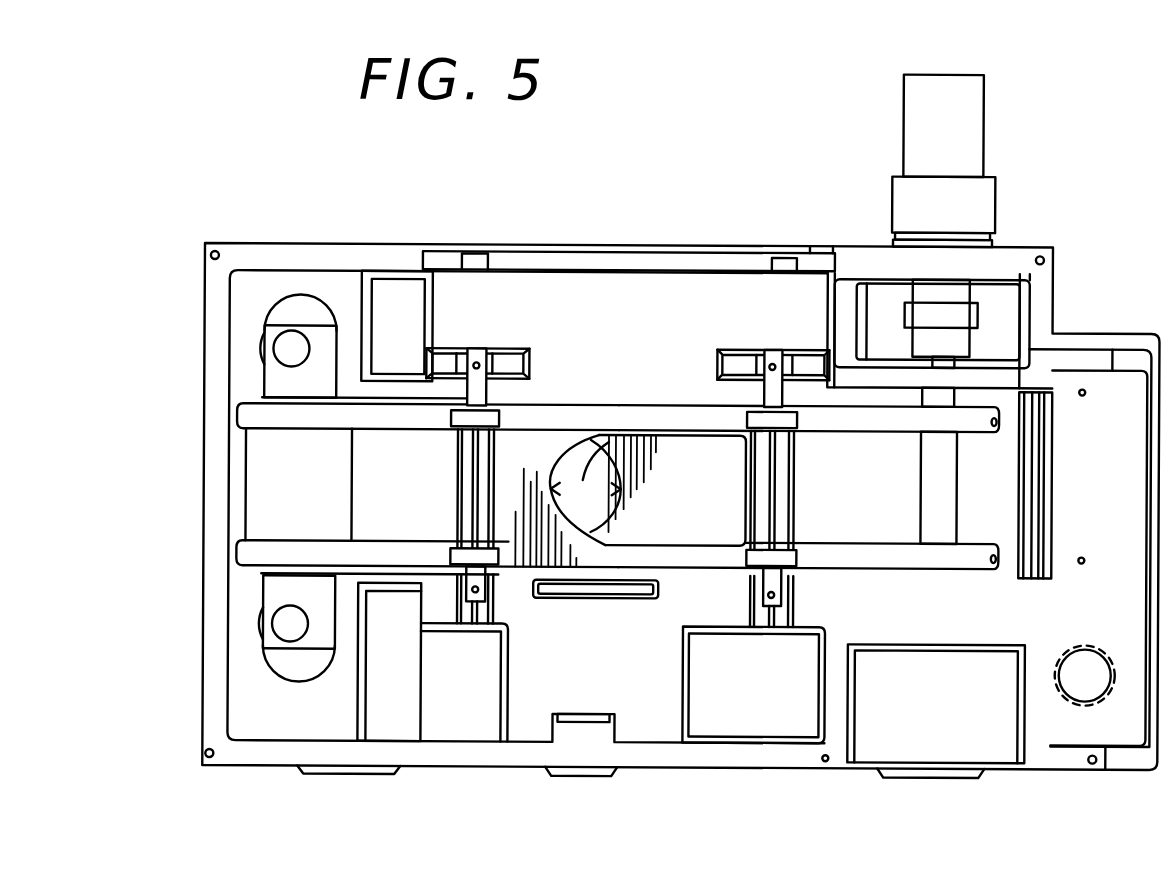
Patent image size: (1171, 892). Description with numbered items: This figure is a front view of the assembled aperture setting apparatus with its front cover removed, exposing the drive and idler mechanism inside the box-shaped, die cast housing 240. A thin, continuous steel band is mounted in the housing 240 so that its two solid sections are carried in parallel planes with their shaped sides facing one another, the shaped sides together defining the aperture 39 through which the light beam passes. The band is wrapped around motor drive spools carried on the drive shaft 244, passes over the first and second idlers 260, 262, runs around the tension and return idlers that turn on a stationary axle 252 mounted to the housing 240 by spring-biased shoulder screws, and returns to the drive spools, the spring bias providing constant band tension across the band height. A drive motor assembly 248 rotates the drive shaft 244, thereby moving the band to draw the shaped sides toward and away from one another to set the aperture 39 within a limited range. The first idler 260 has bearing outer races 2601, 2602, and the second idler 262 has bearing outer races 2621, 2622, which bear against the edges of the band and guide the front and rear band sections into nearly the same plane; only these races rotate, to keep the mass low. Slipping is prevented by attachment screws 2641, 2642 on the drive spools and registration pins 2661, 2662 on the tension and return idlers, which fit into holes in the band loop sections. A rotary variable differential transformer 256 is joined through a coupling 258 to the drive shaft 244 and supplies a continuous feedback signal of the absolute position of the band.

The aperture 39 is at (583, 480).
The housing 240 is at (253, 752).
The drive shaft 244 is at (948, 487).
The drive motor assembly 248 is at (1005, 740).
The stationary axle 252 is at (255, 500).
The rotary variable differential transformer 256 is at (987, 200).
The coupling 258 is at (976, 309).
The first idler 260 is at (477, 495).
The bearing outer race of first idler 2601 is at (507, 410).
The bearing outer race of first idler 2602 is at (500, 561).
The second idler 262 is at (769, 480).
The bearing outer race of second idler 2621 is at (745, 410).
The bearing outer race of second idler 2622 is at (700, 600).
The attachment screw 2641 is at (1003, 418).
The attachment screw 2642 is at (1005, 576).
The registration pin 2661 is at (238, 417).
The registration pin 2662 is at (240, 553).